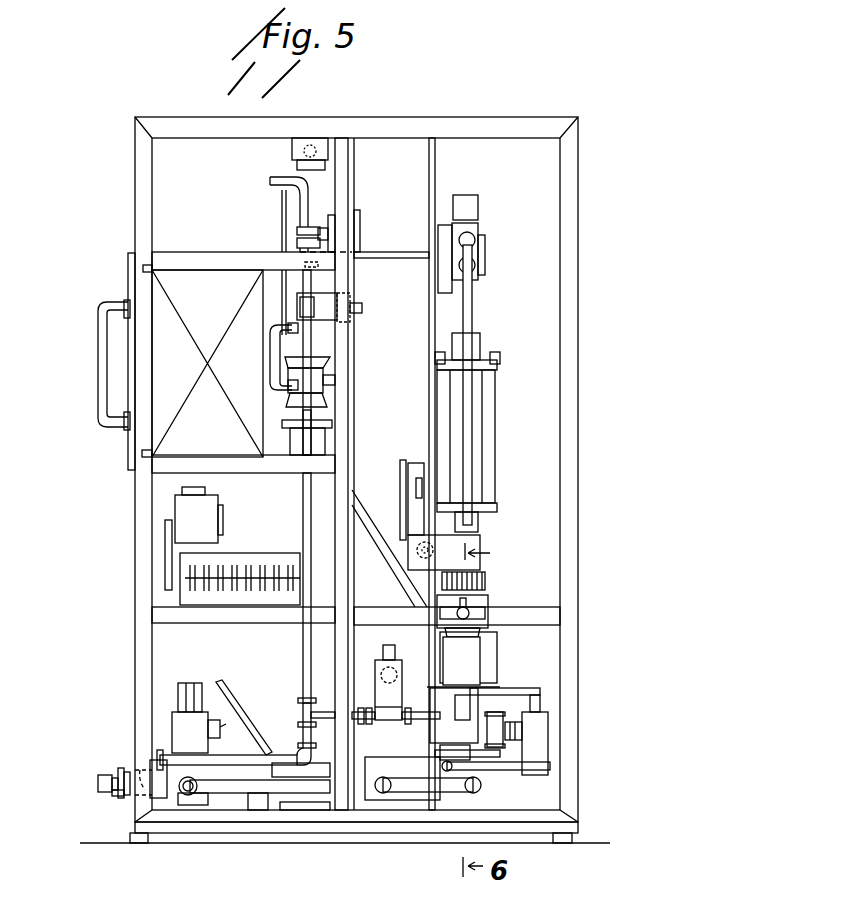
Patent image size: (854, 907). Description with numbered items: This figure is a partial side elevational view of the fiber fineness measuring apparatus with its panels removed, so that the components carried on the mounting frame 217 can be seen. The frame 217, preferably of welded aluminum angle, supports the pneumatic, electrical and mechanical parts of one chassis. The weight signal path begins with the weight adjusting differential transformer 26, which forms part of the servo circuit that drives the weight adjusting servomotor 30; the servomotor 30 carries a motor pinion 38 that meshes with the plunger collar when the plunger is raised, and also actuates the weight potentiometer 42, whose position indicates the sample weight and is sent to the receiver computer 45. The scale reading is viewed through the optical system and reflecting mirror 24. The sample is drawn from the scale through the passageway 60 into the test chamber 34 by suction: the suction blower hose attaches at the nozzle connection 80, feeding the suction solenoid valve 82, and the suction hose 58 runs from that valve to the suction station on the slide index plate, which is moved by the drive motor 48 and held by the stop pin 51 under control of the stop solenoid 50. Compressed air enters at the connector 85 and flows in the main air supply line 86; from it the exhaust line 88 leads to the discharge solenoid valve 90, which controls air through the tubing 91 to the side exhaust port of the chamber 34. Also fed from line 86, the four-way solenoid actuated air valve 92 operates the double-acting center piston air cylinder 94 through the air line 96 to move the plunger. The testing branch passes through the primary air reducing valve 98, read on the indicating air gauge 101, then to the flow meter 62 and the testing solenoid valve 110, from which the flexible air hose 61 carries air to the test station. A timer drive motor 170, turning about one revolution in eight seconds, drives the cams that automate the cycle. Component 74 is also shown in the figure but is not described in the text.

The mounting frame 217 is at (153, 208).
The flow meter 62 is at (283, 191).
The indicating air gauge 101 is at (362, 215).
The receiver computer 45 is at (208, 311).
The primary air reducing valve 98 is at (362, 303).
The four-way solenoid actuated air valve 92 is at (484, 238).
The air line 96 is at (474, 320).
The double-acting center piston air cylinder 94 is at (476, 415).
The weight potentiometer 42 is at (406, 484).
The weight adjusting differential transformer 26 is at (410, 510).
The pump 74 is at (292, 491).
The timer drive motor 170 is at (220, 524).
The motor pinion 38 is at (487, 580).
The weight adjusting servomotor 30 is at (490, 598).
The main air supply line 86 is at (302, 642).
The discharge solenoid valve 90 is at (375, 672).
The suction solenoid valve 82 is at (165, 710).
The reflecting mirror 24 is at (245, 700).
The passageway 60 is at (495, 648).
The test chamber 34 is at (463, 690).
The stop solenoid 50 is at (495, 712).
The exhaust line 88 is at (300, 714).
The tubing 91 is at (430, 722).
The testing solenoid valve 110 is at (548, 722).
The stop pin 51 is at (505, 752).
The nozzle connection 80 is at (104, 776).
The connector 85 is at (113, 794).
The flexible air hose 61 is at (512, 775).
The suction hose 58 is at (226, 795).
The drive motor 48 is at (372, 795).